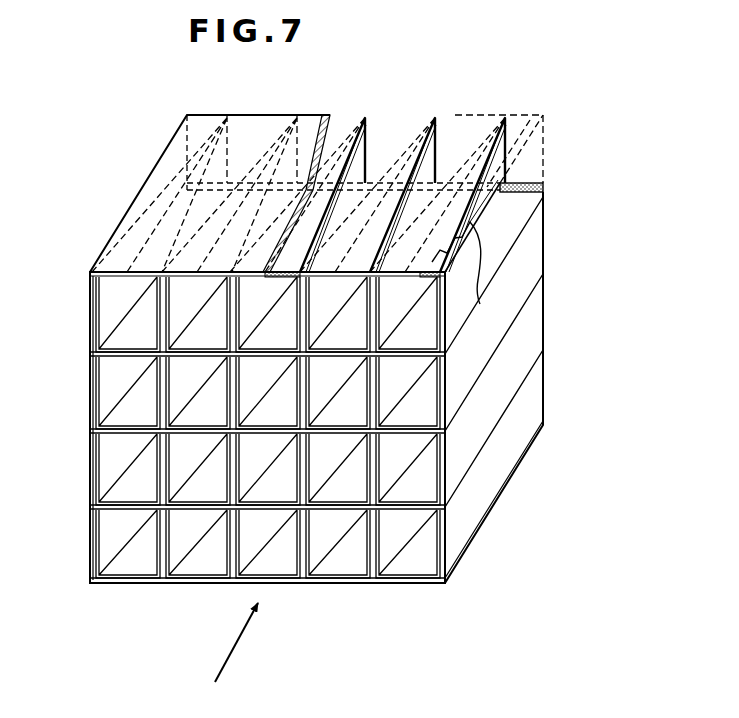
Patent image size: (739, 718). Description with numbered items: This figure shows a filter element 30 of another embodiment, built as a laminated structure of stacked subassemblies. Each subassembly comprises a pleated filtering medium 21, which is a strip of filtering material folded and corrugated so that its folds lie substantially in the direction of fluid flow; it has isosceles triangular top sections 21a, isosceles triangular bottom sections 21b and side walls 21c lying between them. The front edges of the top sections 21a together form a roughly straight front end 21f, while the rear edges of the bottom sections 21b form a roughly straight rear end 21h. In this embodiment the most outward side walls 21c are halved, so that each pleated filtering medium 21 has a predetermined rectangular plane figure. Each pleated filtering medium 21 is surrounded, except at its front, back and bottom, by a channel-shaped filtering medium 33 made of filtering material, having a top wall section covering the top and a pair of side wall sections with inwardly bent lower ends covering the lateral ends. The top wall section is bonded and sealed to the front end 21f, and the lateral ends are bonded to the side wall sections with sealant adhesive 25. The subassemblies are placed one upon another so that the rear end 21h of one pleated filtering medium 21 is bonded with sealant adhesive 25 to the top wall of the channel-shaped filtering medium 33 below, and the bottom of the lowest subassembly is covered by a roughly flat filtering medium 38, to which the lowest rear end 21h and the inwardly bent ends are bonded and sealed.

The filter element 30 is at (579, 111).
The channel-shaped filtering medium 33 is at (136, 196).
The sealant adhesive 25 is at (530, 187).
The pleated filtering medium 21 is at (444, 122).
The triangular top section 21a is at (410, 155).
The triangular bottom section 21b is at (440, 185).
The side wall 21c is at (489, 200).
The front end 21f is at (356, 278).
The rear end 21h is at (320, 114).
The flat filtering medium 38 is at (334, 585).